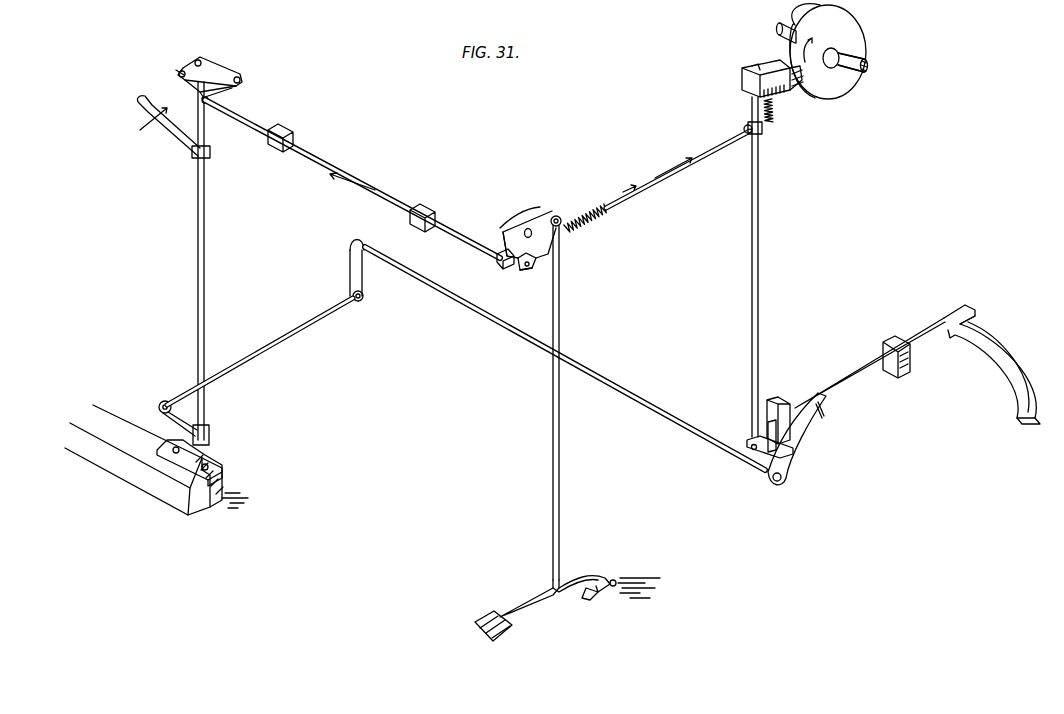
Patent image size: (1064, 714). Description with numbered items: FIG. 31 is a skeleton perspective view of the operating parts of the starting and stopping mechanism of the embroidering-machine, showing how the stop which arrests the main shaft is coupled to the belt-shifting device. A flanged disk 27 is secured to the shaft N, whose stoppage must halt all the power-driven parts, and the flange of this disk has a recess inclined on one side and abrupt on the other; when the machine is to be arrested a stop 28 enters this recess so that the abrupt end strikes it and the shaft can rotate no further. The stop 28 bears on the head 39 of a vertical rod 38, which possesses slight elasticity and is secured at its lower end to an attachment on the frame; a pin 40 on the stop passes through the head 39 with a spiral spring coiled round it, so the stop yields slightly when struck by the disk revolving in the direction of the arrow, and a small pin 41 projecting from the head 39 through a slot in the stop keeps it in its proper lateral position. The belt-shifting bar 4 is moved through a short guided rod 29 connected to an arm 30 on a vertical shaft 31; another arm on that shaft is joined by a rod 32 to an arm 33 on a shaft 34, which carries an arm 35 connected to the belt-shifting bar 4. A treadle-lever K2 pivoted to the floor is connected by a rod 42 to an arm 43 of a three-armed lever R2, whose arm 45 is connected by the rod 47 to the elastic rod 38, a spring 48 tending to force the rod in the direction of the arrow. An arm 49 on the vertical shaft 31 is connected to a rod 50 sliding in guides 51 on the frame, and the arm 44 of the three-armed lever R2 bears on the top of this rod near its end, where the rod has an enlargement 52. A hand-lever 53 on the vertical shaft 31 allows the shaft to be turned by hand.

The belt-shifting bar 4 is at (838, 384).
The flanged disk 27 is at (822, 51).
The stop 28 is at (780, 72).
The short guided rod 29 is at (234, 90).
The arm 30 is at (210, 71).
The vertical shaft 31 is at (206, 224).
The rod 32 is at (260, 351).
The arm 33 is at (351, 272).
The shaft 34 is at (512, 325).
The arm 35 is at (818, 447).
The vertical rod 38 is at (759, 252).
The head 39 is at (746, 88).
The pin 40 is at (772, 120).
The small pin 41 is at (747, 67).
The rod 42 is at (559, 446).
The arm 43 is at (541, 215).
The arm 44 is at (504, 236).
The arm 45 is at (528, 270).
The rod 47 is at (678, 169).
The spring 48 is at (585, 210).
The arm 49 is at (182, 68).
The rod 50 is at (352, 179).
The guides 51 is at (292, 136).
The enlargement 52 is at (503, 268).
The hand-lever 53 is at (169, 126).
The treadle-lever K2 is at (567, 607).
The three-armed lever R2 is at (520, 206).
The shaft N is at (866, 70).